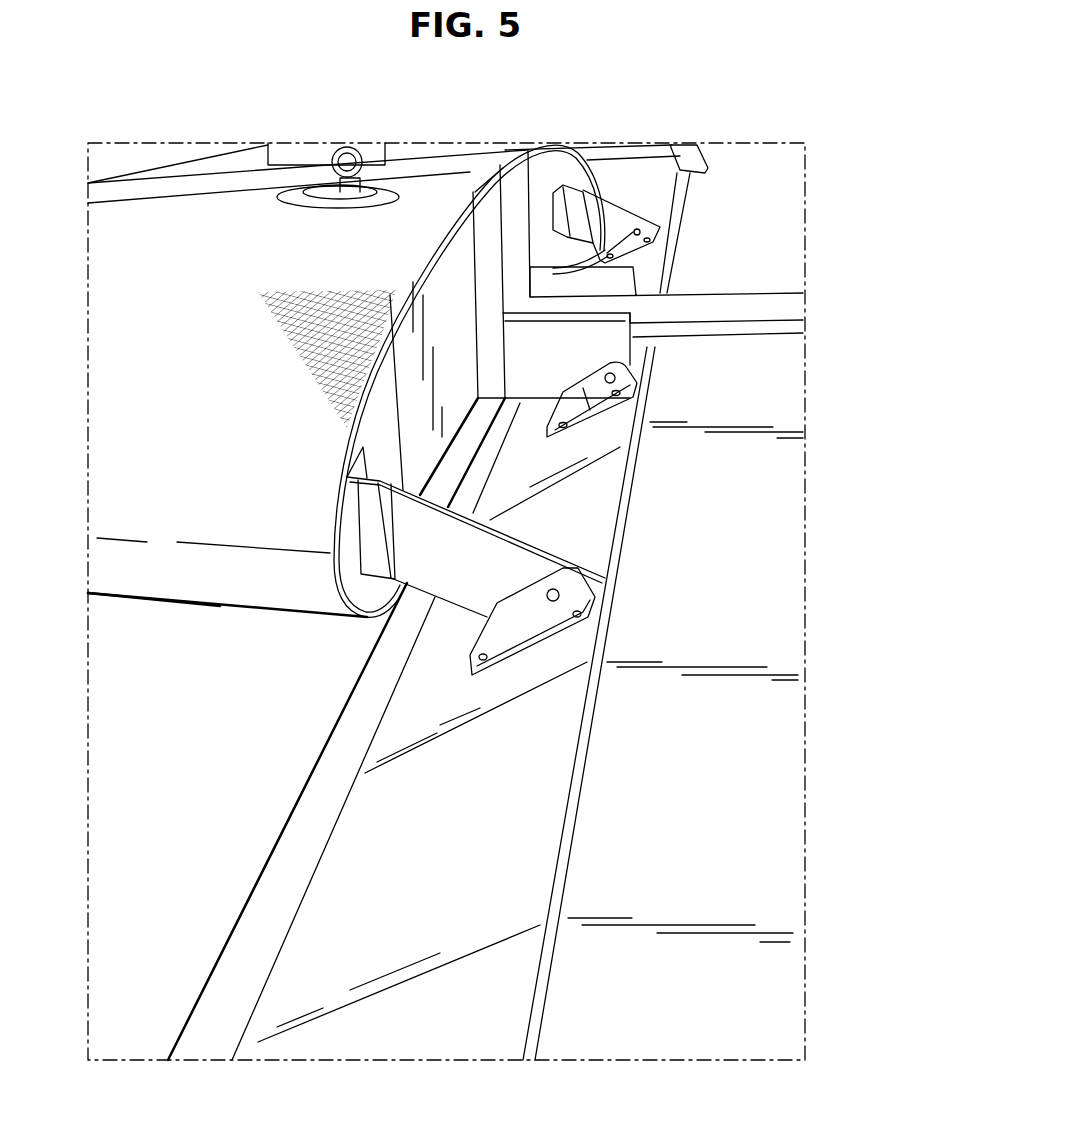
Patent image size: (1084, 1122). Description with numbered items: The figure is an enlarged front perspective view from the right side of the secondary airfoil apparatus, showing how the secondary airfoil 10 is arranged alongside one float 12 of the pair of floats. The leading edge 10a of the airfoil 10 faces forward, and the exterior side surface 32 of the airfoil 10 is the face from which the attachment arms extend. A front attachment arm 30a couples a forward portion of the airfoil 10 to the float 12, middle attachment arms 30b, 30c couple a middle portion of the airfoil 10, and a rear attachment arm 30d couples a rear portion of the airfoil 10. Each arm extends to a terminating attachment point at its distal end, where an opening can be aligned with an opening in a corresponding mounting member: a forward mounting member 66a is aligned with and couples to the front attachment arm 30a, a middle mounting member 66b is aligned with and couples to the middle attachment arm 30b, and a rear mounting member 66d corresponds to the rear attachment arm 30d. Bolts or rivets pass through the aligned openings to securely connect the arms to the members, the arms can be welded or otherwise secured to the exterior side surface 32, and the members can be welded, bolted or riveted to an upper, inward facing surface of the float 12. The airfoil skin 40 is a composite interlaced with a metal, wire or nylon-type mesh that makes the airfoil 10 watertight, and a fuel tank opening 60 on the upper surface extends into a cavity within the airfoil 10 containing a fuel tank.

The secondary airfoil 10 is at (222, 414).
The leading edge 10a is at (125, 573).
The float 12 is at (497, 857).
The front attachment arm 30a is at (426, 574).
The middle attachment arm 30b is at (529, 363).
The middle attachment arm 30c is at (587, 283).
The rear attachment arm 30d is at (622, 228).
The exterior side surface 32 is at (432, 281).
The airfoil skin 40 is at (305, 300).
The fuel tank opening 60 is at (390, 185).
The forward mounting member 66a is at (573, 592).
The middle mounting member 66b is at (587, 418).
The rear mounting member 66d is at (652, 214).